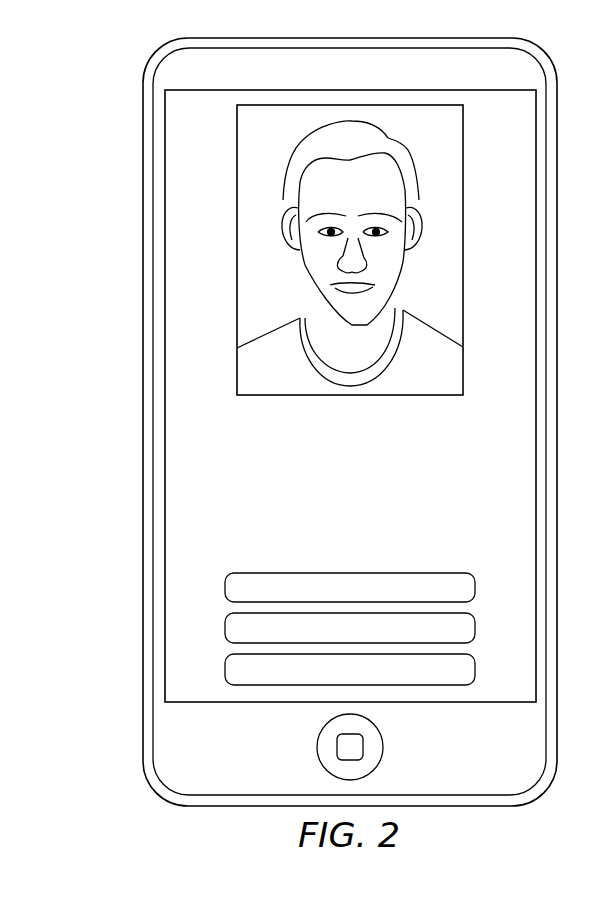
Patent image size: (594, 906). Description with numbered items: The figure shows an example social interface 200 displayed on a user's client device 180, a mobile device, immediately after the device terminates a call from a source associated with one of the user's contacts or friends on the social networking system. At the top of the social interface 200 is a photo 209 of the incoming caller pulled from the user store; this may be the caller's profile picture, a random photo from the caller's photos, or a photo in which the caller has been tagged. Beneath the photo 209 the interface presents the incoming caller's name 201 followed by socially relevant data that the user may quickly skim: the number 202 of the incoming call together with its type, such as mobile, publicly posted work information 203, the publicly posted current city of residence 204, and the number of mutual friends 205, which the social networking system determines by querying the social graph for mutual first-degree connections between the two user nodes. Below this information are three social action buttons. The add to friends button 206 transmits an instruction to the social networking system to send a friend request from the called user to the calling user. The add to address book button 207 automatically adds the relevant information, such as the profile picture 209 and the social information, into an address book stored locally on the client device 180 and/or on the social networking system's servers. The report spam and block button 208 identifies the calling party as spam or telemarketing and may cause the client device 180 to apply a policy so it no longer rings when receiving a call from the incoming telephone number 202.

The client device 180 is at (143, 133).
The social interface 200 is at (165, 244).
The photo 209 is at (237, 178).
The incoming caller's name 201 is at (300, 423).
The number of the incoming call 202 is at (240, 456).
The publicly-posted work information 203 is at (271, 486).
The publicly-posted current city of residence 204 is at (234, 516).
The number of mutual friends 205 is at (278, 550).
The add to friends button 206 is at (225, 585).
The add to address book button 207 is at (225, 627).
The report spam and block button 208 is at (225, 668).